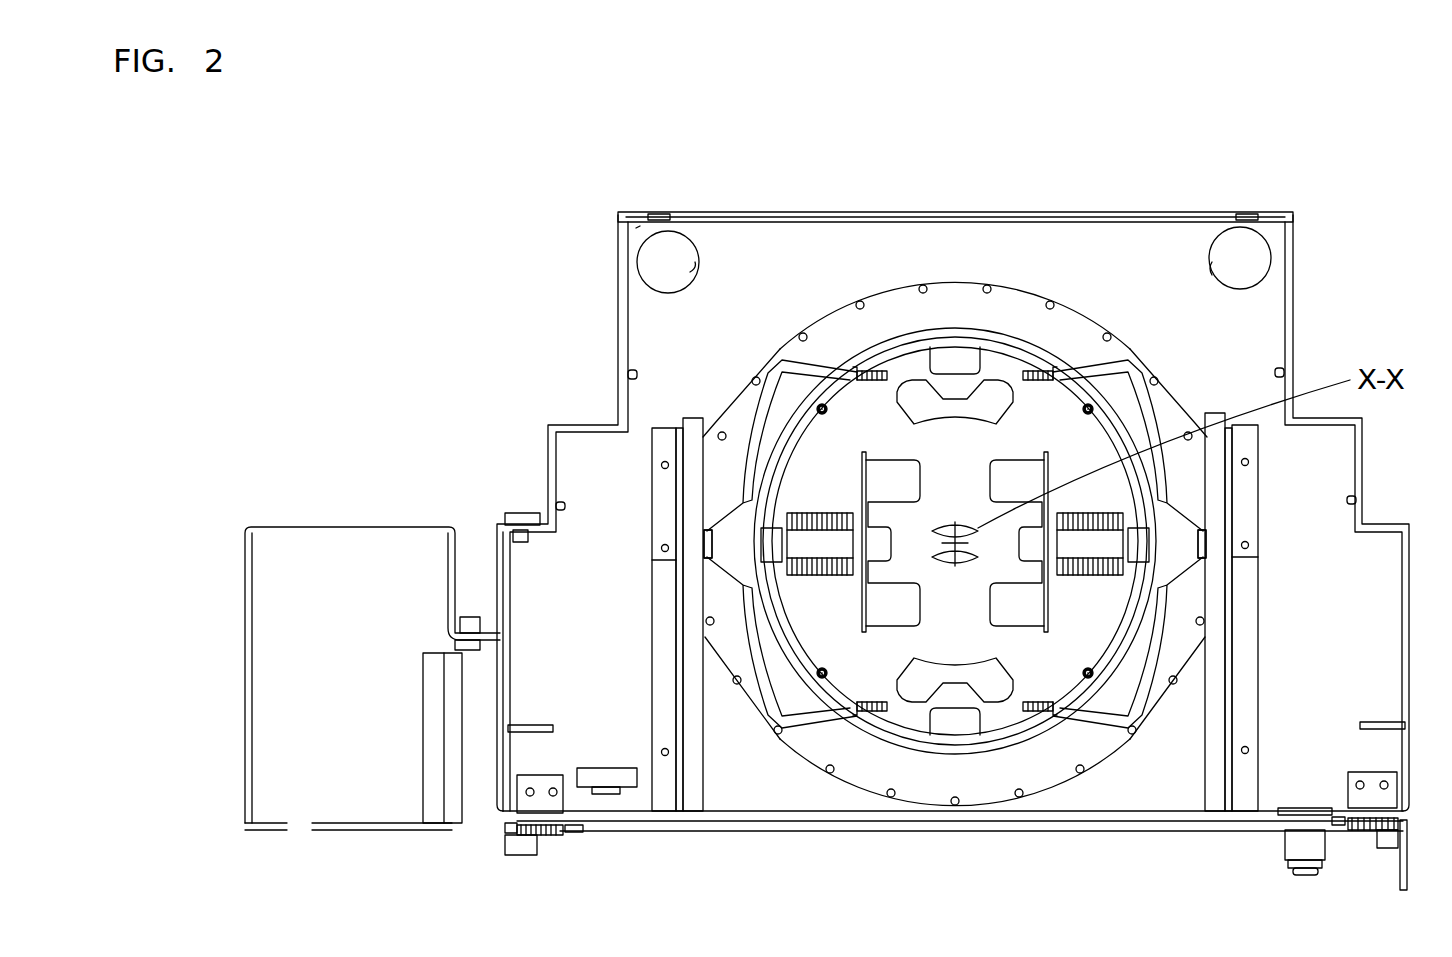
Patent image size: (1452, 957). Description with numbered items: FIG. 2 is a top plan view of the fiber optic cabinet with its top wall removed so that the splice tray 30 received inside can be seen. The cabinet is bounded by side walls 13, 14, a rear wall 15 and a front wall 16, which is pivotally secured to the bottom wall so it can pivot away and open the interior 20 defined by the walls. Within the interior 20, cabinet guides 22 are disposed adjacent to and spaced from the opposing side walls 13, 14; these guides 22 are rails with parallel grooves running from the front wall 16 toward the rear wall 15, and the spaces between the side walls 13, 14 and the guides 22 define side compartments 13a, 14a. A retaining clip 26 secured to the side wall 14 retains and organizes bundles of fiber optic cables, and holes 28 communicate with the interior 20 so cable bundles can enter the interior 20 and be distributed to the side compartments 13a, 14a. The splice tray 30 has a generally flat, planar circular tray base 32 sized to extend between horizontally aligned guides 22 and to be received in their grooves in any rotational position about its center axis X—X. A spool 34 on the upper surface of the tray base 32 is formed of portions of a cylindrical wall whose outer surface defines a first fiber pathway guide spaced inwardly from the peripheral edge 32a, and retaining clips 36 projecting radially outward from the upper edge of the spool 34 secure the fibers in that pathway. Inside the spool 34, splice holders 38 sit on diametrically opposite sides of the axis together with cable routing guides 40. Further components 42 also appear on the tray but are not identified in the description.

The side wall 13 is at (1363, 470).
The side compartment 13a is at (1334, 646).
The side wall 14 is at (545, 480).
The side compartment 14a is at (602, 636).
The rear wall 15 is at (1013, 210).
The front wall 16 is at (610, 836).
The interior 20 is at (850, 258).
The cabinet guides 22 is at (695, 417).
The retaining clip 26 is at (360, 527).
The holes 28 is at (690, 272).
The splice tray 30 is at (1088, 298).
The tray base 32 is at (805, 770).
The peripheral edge 32a is at (743, 710).
The spool 34 is at (980, 742).
The retaining clips 36 is at (788, 380).
The splice holders 38 is at (820, 518).
The cable routing guides 40 is at (962, 524).
The clamps 42 is at (863, 368).